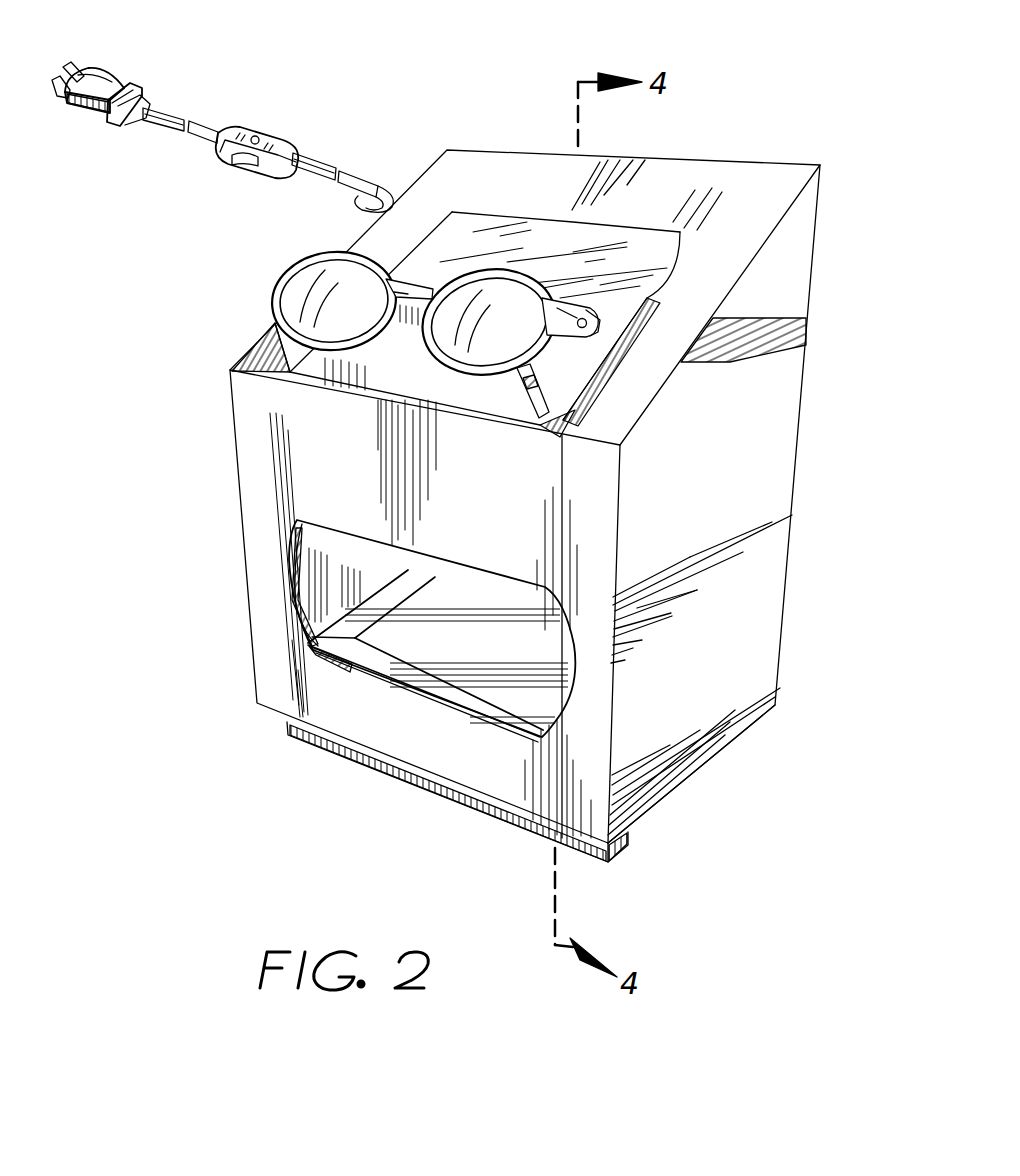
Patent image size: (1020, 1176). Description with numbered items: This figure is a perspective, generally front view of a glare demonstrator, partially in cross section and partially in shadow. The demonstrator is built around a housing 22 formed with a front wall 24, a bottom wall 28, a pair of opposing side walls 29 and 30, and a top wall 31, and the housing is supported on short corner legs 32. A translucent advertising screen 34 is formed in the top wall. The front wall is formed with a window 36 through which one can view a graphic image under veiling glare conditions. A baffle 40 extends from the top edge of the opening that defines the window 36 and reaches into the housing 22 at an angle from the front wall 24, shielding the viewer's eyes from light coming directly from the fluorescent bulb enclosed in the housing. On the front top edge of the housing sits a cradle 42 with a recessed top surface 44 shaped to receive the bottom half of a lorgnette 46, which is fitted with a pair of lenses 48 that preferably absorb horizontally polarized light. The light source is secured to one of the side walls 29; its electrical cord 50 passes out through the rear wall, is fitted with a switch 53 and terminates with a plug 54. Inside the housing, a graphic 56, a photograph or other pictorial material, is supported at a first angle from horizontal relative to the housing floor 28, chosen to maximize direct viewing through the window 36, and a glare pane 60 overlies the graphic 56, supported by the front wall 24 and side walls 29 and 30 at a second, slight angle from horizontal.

The housing 22 is at (782, 390).
The front wall 24 is at (328, 485).
The bottom wall 28 is at (713, 753).
The side wall 29 is at (236, 464).
The side wall 30 is at (750, 643).
The top wall 31 is at (735, 180).
The short corner legs 32 is at (630, 846).
The translucent advertising screen 34 is at (452, 232).
The window 36 is at (313, 603).
The baffle 40 is at (330, 540).
The cradle 42 is at (462, 393).
The recessed top surface 44 is at (532, 376).
The lorgnette 46 is at (272, 303).
The lenses 48 is at (322, 275).
The electrical cord 50 is at (318, 163).
The switch 53 is at (247, 128).
The plug 54 is at (102, 65).
The graphic 56 is at (445, 640).
The glare pane 60 is at (473, 693).